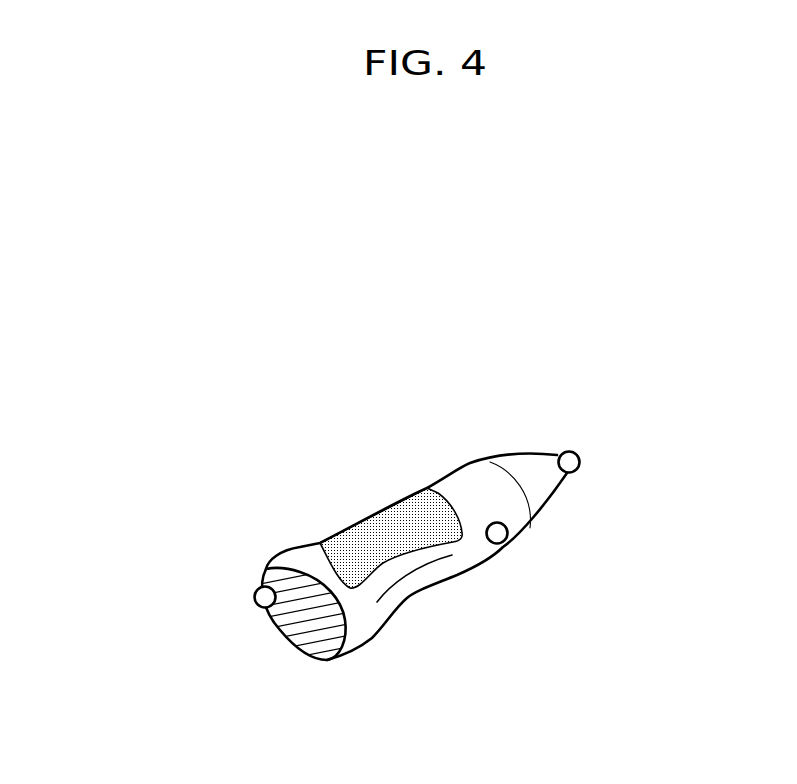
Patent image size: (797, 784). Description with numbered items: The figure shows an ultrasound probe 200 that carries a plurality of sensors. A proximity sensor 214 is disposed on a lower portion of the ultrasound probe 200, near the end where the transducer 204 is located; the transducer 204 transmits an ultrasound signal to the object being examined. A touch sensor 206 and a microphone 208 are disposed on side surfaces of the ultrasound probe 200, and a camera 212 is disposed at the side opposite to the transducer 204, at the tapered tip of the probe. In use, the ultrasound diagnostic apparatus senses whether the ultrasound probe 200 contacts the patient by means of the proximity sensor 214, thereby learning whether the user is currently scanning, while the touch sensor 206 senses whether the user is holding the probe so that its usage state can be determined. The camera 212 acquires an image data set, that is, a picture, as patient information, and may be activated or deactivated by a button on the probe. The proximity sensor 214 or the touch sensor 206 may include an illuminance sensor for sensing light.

The ultrasound probe 200 is at (468, 473).
The transducer 204 is at (317, 635).
The touch sensor 206 is at (362, 502).
The microphone 208 is at (520, 554).
The camera 212 is at (599, 448).
The proximity sensor 214 is at (234, 588).